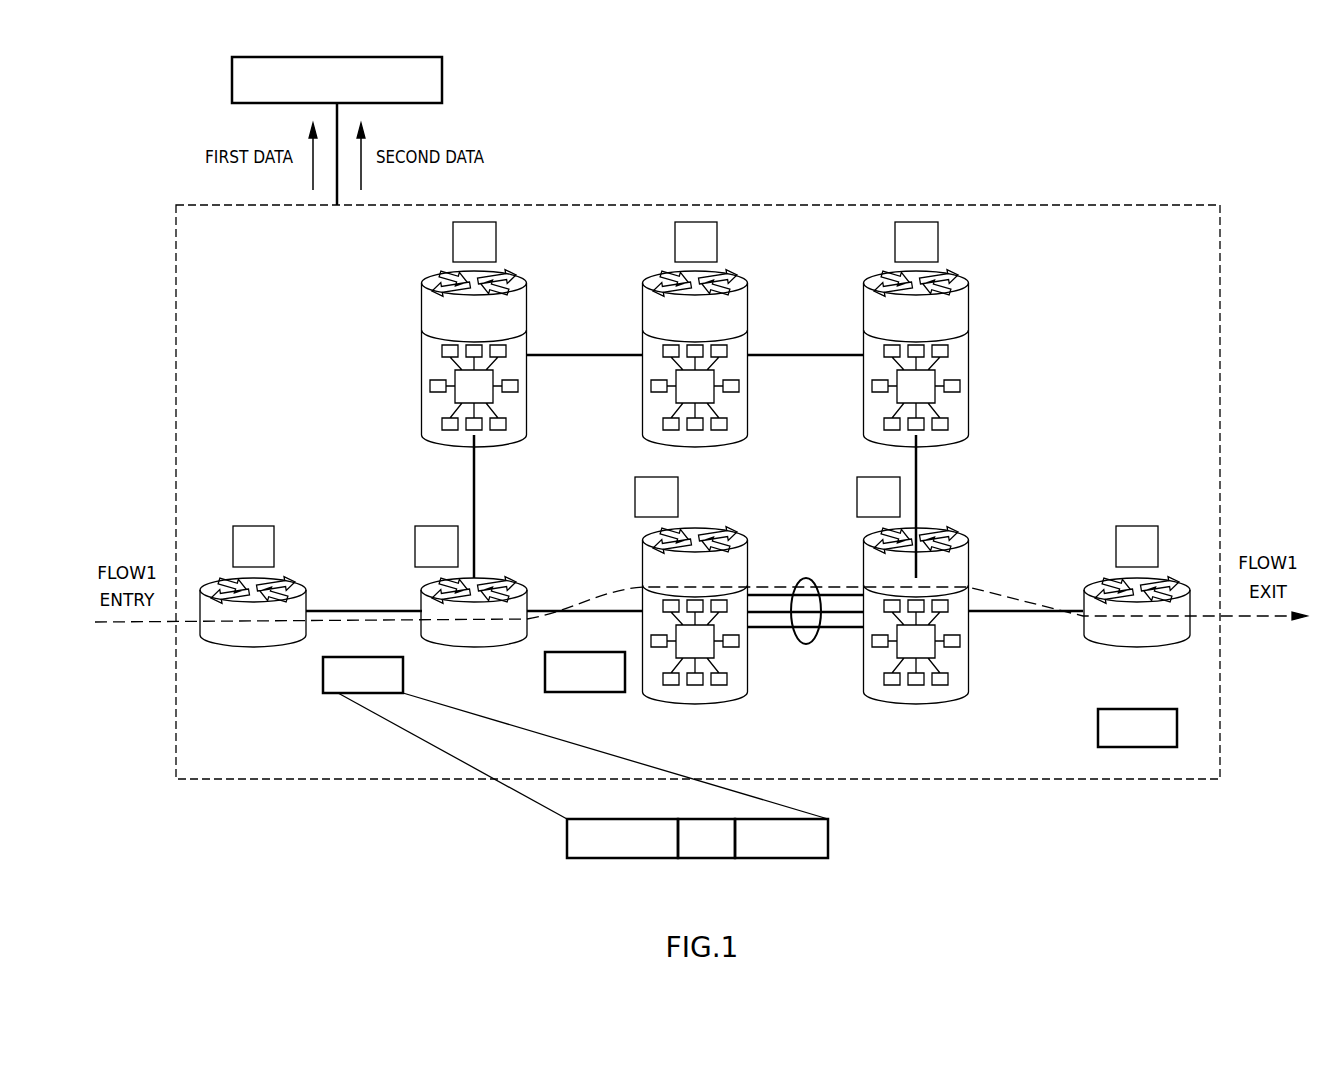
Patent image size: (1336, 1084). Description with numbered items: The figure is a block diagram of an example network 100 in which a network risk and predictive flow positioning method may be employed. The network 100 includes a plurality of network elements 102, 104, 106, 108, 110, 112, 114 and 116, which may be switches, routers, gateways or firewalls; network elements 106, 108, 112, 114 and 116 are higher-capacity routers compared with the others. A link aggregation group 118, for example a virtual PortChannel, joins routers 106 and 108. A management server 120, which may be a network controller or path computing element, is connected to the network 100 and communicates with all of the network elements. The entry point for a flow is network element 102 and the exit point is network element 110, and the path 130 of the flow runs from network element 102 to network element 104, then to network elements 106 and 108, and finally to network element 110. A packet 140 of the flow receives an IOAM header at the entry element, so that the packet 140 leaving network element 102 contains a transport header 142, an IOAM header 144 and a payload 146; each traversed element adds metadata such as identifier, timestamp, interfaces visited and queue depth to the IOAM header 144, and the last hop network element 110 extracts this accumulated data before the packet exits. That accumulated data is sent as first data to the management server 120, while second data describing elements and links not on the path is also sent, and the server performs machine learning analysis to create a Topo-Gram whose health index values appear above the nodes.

The network 100 is at (248, 780).
The network element 102 is at (220, 643).
The network element 104 is at (450, 643).
The network element 106 is at (725, 692).
The network element 108 is at (945, 692).
The network element 110 is at (1112, 640).
The network element 112 is at (422, 383).
The network element 114 is at (642, 338).
The network element 116 is at (863, 345).
The link aggregation group 118 is at (808, 645).
The management server 120 is at (232, 79).
The path 130 is at (370, 622).
The packet 140 is at (323, 680).
The transport header 142 is at (590, 860).
The IOAM header 144 is at (700, 860).
The payload 146 is at (800, 860).